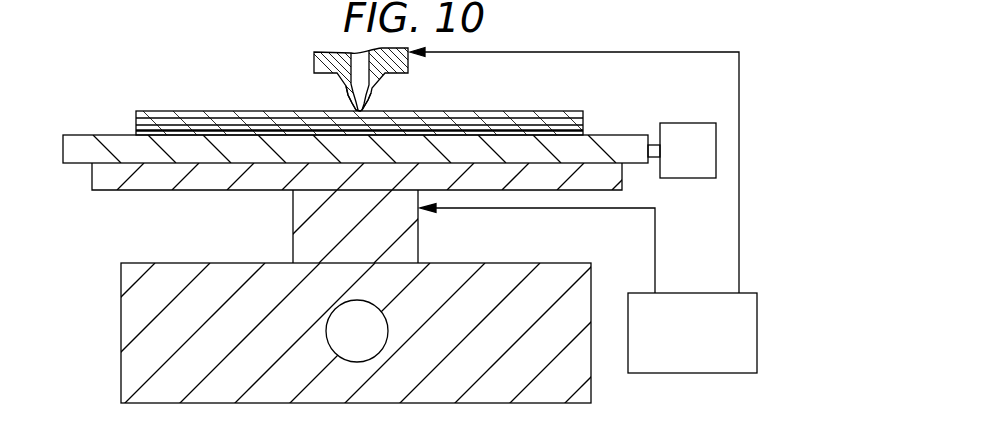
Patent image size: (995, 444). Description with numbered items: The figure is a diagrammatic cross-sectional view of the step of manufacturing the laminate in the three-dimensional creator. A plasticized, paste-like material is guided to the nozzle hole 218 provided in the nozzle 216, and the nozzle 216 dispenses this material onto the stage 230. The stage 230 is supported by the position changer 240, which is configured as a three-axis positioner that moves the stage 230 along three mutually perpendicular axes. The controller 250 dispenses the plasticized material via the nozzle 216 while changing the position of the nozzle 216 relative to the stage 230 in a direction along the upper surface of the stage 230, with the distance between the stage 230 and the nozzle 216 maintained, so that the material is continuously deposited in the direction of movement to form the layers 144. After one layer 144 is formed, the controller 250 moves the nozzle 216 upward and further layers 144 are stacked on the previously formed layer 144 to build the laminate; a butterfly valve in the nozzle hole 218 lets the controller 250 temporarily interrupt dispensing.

The layers 144 is at (520, 113).
The nozzle 216 is at (348, 99).
The nozzle hole 218 is at (313, 54).
The stage 230 is at (617, 148).
The position changer 240 is at (340, 231).
The controller 250 is at (694, 355).